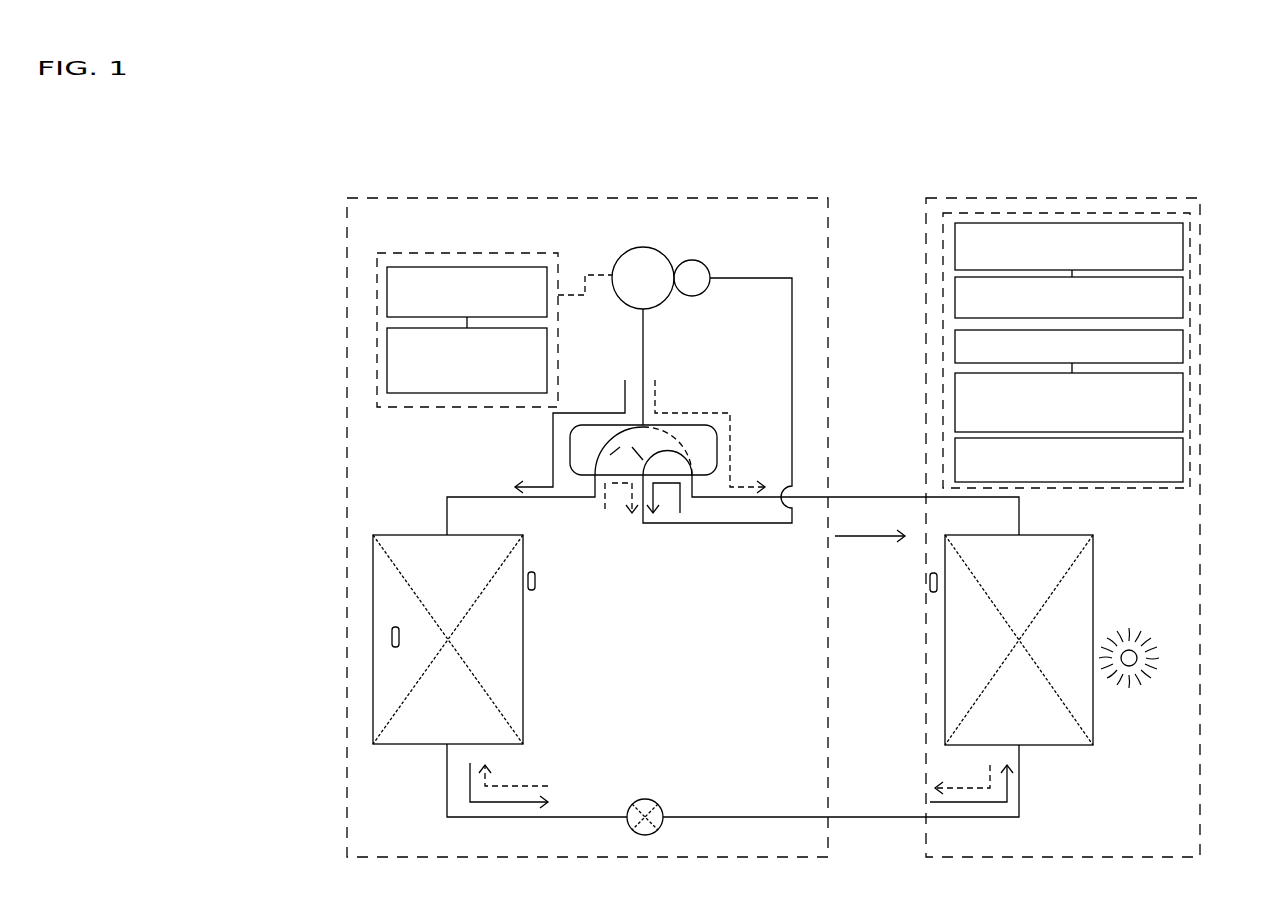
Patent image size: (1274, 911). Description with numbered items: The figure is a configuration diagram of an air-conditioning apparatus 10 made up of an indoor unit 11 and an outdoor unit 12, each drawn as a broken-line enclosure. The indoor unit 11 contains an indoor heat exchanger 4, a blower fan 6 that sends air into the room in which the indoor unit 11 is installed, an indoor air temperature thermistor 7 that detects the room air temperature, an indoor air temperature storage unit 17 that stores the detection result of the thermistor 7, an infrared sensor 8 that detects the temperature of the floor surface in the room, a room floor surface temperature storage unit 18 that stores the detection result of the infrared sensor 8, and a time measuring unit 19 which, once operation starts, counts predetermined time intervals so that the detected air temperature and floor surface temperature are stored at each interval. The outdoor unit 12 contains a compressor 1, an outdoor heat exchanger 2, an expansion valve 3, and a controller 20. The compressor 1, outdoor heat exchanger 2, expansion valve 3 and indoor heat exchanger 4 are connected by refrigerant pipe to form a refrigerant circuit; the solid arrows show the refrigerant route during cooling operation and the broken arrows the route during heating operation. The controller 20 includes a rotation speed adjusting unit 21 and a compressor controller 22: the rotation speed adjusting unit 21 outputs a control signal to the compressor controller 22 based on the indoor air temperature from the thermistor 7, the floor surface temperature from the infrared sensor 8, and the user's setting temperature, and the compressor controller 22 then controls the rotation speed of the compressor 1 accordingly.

The compressor 1 is at (622, 258).
The outdoor heat exchanger 2 is at (373, 548).
The expansion valve 3 is at (663, 826).
The indoor heat exchanger 4 is at (1085, 550).
The blower fan 6 is at (1150, 665).
The indoor air temperature thermistor 7 is at (955, 300).
The infrared sensor 8 is at (955, 347).
The air-conditioning apparatus 10 is at (855, 172).
The indoor unit 11 is at (1058, 198).
The outdoor unit 12 is at (562, 198).
The indoor air temperature storage unit 17 is at (955, 258).
The room floor surface temperature storage unit 18 is at (955, 412).
The time measuring unit 19 is at (955, 458).
The controller 20 is at (378, 252).
The rotation speed adjusting unit 21 is at (387, 375).
The compressor controller 22 is at (387, 305).